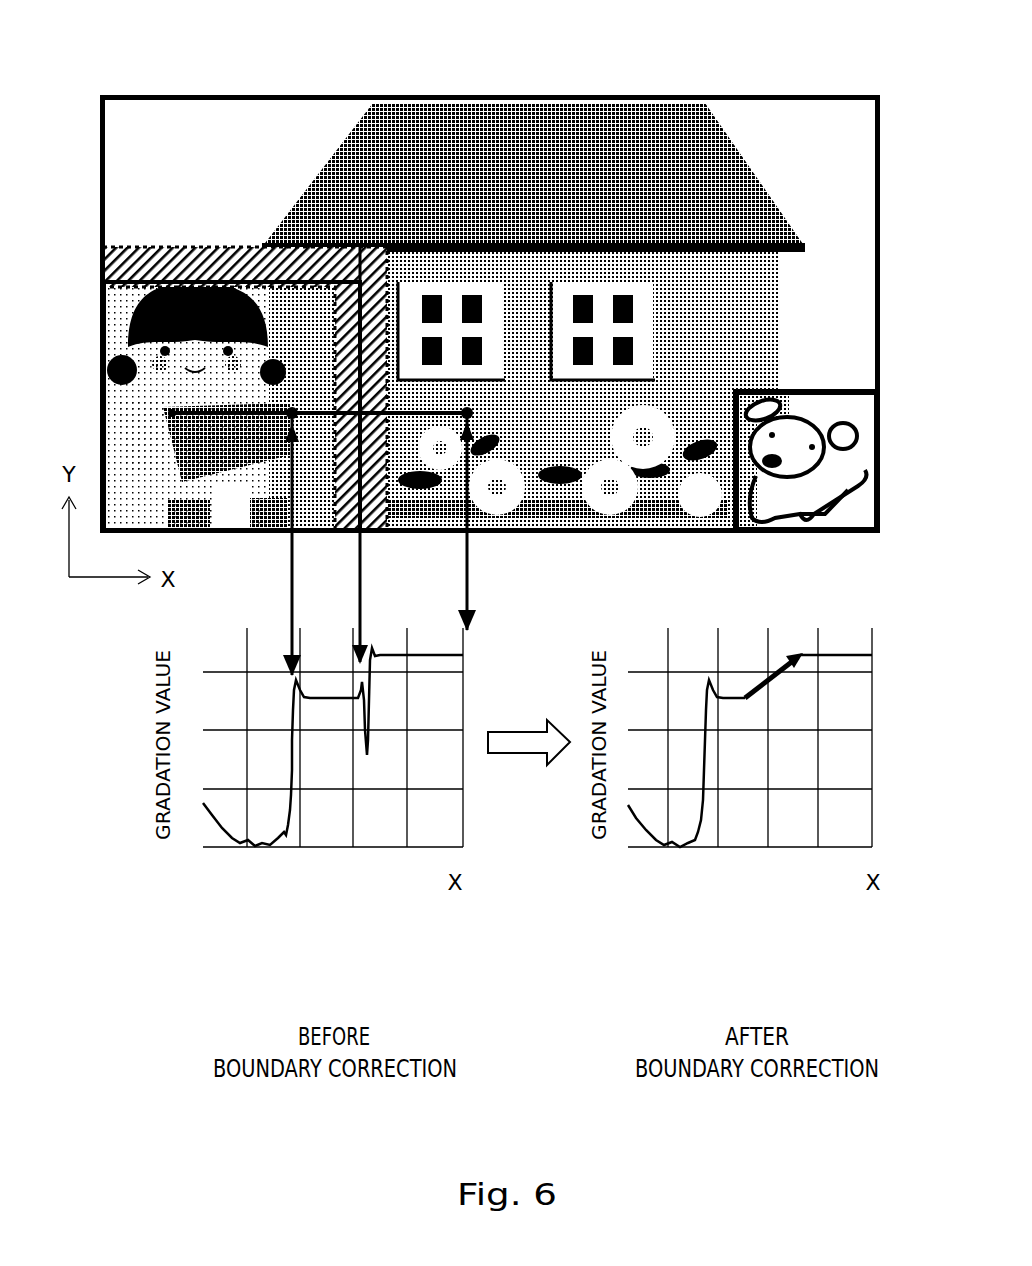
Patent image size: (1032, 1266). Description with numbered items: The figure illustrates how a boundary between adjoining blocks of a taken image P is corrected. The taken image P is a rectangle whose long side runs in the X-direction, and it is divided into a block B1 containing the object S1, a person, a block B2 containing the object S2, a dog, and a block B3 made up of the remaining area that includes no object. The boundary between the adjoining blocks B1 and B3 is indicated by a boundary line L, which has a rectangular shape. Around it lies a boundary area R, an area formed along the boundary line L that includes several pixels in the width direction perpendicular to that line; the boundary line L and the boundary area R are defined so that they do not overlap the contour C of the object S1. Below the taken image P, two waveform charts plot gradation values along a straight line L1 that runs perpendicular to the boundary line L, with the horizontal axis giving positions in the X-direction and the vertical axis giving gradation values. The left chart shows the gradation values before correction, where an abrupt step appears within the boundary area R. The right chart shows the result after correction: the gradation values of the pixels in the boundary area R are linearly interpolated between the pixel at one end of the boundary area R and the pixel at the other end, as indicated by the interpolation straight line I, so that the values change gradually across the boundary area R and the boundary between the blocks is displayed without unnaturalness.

The taken image P is at (713, 97).
The block B1 is at (300, 285).
The block B2 is at (820, 410).
The block B3 is at (583, 534).
The boundary area R is at (228, 250).
The boundary line L is at (393, 237).
The straight line L1 is at (430, 425).
The contour C is at (398, 378).
The object S1 is at (234, 436).
The object S2 is at (787, 392).
The interpolation straight line I is at (770, 668).